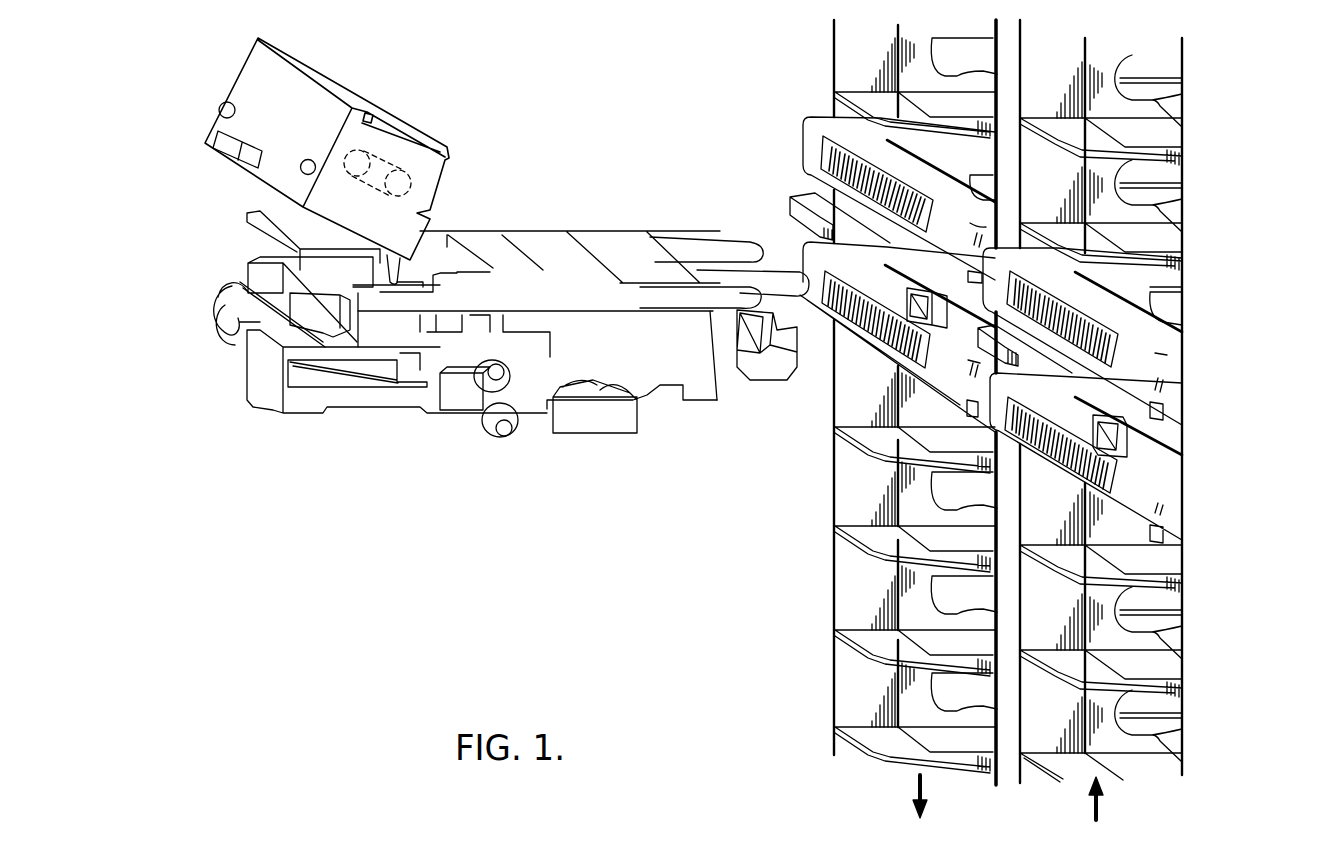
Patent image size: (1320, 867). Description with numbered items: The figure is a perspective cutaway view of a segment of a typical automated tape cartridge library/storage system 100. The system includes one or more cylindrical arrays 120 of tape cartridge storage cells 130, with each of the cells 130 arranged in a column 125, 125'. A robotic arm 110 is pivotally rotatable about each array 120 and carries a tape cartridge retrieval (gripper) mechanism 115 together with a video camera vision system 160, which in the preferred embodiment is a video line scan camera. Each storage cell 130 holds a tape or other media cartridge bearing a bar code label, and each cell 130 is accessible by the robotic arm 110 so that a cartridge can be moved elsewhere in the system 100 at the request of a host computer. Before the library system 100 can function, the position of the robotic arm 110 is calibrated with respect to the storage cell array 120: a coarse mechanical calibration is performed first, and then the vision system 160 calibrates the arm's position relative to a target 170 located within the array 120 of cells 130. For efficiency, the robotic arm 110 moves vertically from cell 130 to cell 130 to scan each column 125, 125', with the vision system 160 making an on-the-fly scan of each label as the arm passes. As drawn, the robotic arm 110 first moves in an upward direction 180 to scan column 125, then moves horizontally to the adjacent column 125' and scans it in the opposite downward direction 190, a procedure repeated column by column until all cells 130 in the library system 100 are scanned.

The automated tape cartridge library/storage system 100 is at (622, 572).
The robotic arm 110 is at (545, 231).
The tape cartridge retrieval (gripper) mechanism 115 is at (752, 242).
The cylindrical array of tape cartridge storage cells 120 is at (805, 787).
The column 125 is at (918, 780).
The adjacent column 125' is at (1146, 770).
The tape cartridge storage cell 130 is at (850, 668).
The video camera vision system 160 is at (458, 107).
The target 170 is at (985, 430).
The upward direction 180 is at (912, 790).
The downward direction 190 is at (1092, 801).